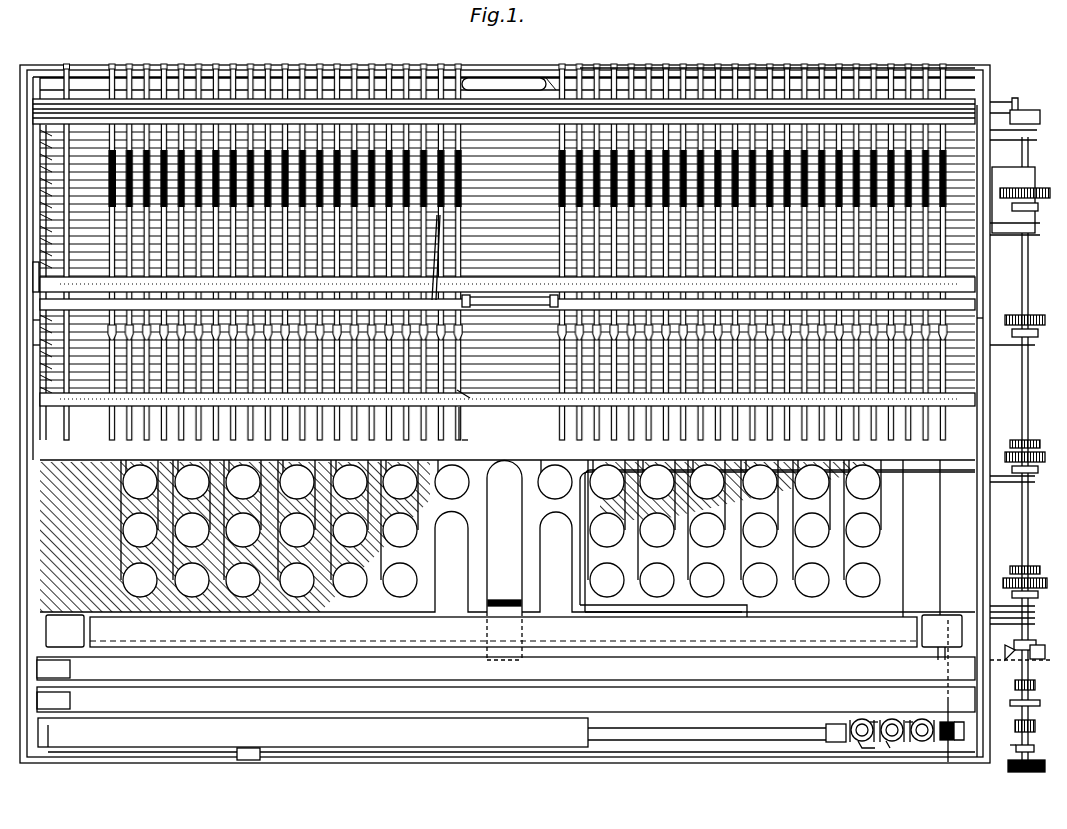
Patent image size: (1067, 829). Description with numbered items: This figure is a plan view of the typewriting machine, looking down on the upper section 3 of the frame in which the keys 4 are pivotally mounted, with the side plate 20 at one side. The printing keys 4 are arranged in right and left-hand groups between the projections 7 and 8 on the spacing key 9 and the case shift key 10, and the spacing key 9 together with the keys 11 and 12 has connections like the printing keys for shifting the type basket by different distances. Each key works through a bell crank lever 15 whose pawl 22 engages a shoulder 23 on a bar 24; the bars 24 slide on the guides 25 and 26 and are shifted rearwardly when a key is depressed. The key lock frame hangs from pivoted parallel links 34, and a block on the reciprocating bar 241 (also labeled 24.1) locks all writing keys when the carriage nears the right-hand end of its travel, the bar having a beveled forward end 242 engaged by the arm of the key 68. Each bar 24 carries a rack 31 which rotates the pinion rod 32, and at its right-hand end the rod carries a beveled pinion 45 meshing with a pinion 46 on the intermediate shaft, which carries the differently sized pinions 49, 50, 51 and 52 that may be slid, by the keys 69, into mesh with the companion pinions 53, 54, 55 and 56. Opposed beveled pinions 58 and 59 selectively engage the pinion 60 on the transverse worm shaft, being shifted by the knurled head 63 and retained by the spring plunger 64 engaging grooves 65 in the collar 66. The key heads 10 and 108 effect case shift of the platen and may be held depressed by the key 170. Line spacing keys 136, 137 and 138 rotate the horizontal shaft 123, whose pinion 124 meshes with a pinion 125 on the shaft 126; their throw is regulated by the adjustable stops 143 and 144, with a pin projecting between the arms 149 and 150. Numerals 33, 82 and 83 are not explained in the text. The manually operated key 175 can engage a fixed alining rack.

The upper section 3 is at (30, 104).
The keys 4 is at (128, 575).
The projection 7 is at (507, 536).
The projection 8 is at (55, 293).
The spacing key 9 is at (40, 358).
The case shift key 10 is at (506, 667).
The key 11 is at (65, 631).
The key 12 is at (942, 637).
The bell crank lever 15 is at (463, 438).
The side plate 20 is at (985, 277).
The pawl 22 is at (461, 419).
The shoulder 23 is at (462, 390).
The bar 24 is at (302, 68).
The reciprocating bar 24.1 is at (582, 68).
The guide 25 is at (548, 297).
The guide 26 is at (546, 78).
The rack 31 is at (110, 160).
The pinion rod 32 is at (920, 102).
The heads 33 is at (40, 330).
The pivoted parallel link 34 is at (34, 272).
The beveled pinion 45 is at (1014, 96).
The pinion 46 is at (1028, 110).
The pinion 49 is at (1038, 207).
The pinion 50 is at (1036, 337).
The pinion 51 is at (1036, 468).
The pinion 52 is at (1037, 594).
The companion pinion 53 is at (1046, 186).
The companion pinion 54 is at (1040, 316).
The companion pinion 55 is at (1038, 446).
The companion pinion 56 is at (1036, 572).
The beveled pinion 58 is at (1036, 645).
The beveled pinion 59 is at (1035, 686).
The pinion 60 is at (1020, 649).
The knurled head 63 is at (1028, 772).
The spring plunger 64 is at (1016, 748).
The groove 65 is at (1036, 728).
The collar 66 is at (1034, 744).
The key 68 is at (506, 735).
The key 69 is at (1012, 705).
The rod 82 is at (440, 350).
The lever 83 is at (980, 320).
The key head 108 is at (506, 699).
The horizontal shaft 123 is at (682, 742).
The pinion 124 is at (947, 748).
The pinion 125 is at (952, 742).
The shaft 126 is at (956, 716).
The line spacing key 136 is at (860, 718).
The line spacing key 137 is at (890, 718).
The line spacing key 138 is at (926, 718).
The adjustable stop 143 is at (872, 722).
The adjustable stop 144 is at (860, 748).
The arm 149 is at (888, 748).
The arm 150 is at (910, 722).
The key 170 is at (62, 698).
The manually operated key 175 is at (252, 760).
The reciprocating bar 241 is at (588, 577).
The beveled forward end 242 is at (740, 660).